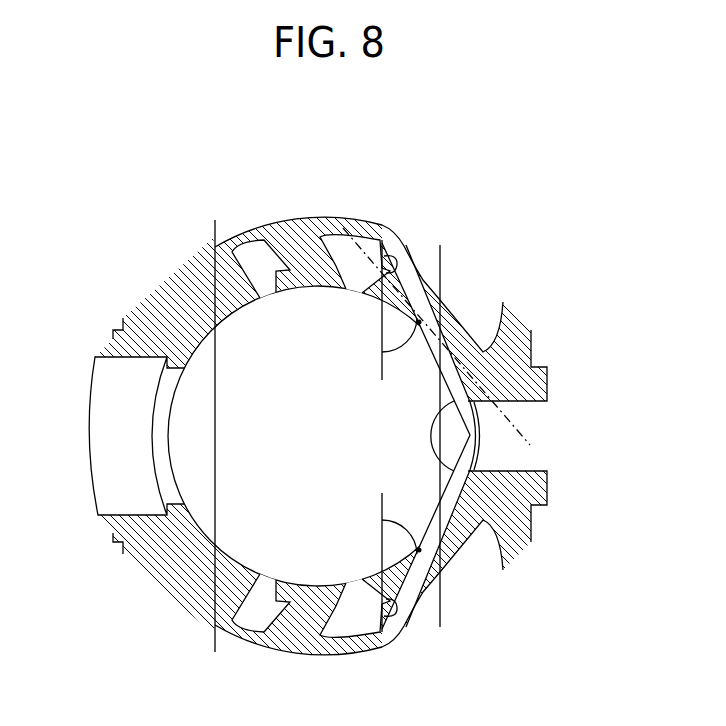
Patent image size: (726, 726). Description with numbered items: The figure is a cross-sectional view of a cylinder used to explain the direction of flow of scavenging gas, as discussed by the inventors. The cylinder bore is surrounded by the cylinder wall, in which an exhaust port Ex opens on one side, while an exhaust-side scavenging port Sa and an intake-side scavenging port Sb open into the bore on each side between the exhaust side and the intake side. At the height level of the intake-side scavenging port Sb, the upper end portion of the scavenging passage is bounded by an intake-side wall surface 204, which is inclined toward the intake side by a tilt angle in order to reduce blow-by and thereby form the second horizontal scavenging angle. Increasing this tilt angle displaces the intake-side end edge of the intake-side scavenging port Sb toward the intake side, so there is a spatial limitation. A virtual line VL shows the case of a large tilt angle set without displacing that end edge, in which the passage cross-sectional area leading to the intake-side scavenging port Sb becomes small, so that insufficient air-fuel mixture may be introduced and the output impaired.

The intake-side wall surface 204 is at (385, 262).
The exhaust-side scavenging port Sa is at (277, 289).
The intake-side scavenging port Sb is at (345, 283).
The exhaust port Ex is at (108, 432).
The virtual line VL is at (518, 431).